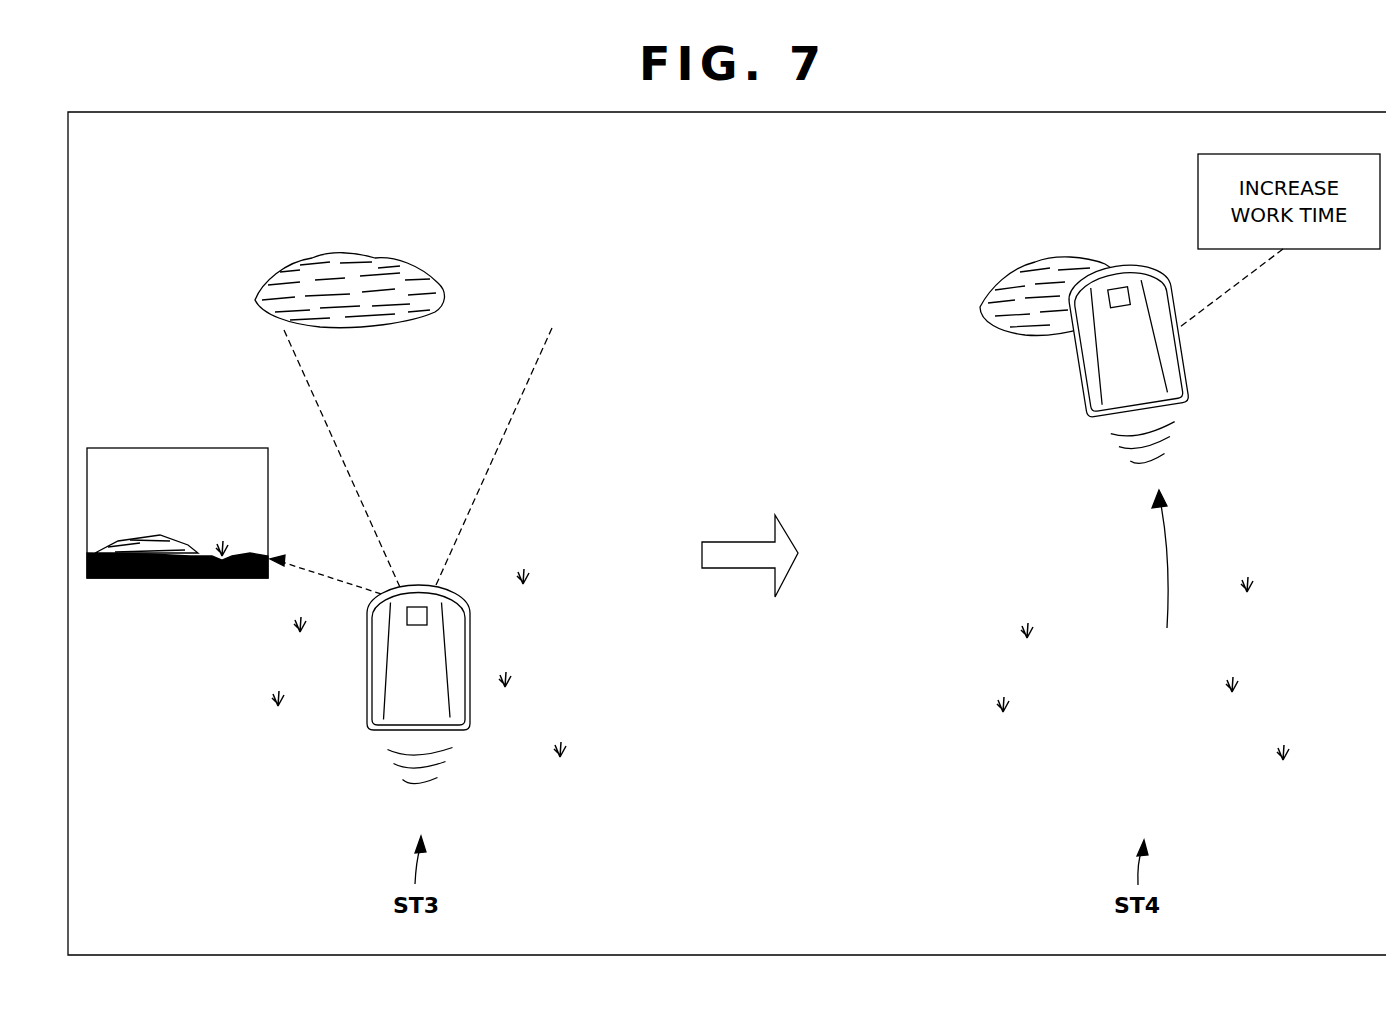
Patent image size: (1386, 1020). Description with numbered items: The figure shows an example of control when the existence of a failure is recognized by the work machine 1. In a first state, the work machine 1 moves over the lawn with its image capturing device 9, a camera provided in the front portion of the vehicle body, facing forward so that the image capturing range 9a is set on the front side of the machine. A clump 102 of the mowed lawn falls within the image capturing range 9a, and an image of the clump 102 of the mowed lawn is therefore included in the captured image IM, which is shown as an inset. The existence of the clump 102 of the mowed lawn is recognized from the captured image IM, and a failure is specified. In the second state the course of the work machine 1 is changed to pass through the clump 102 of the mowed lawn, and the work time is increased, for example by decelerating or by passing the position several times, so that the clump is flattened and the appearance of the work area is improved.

The work machine 1 is at (380, 731).
The image capturing device 9 is at (416, 625).
The image capturing range 9a is at (512, 425).
The clump of the mowed lawn 102 is at (338, 252).
The captured image IM is at (162, 447).